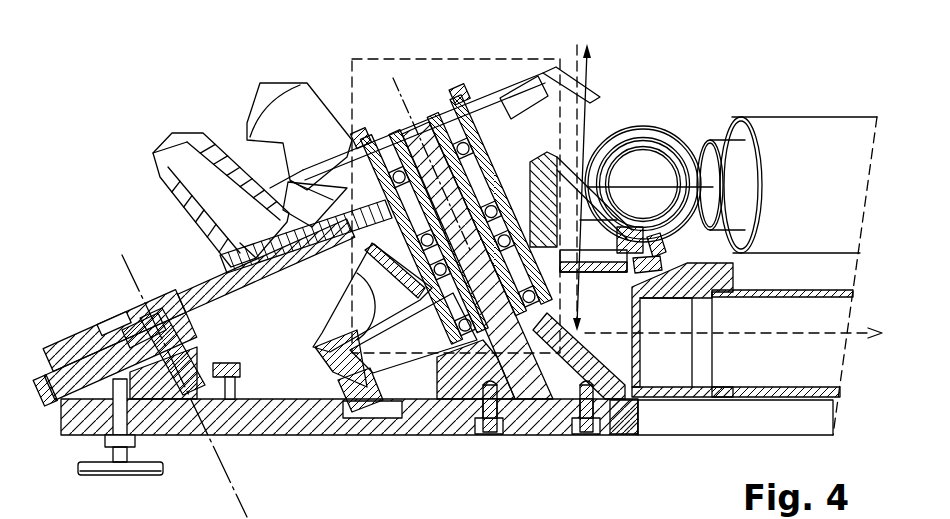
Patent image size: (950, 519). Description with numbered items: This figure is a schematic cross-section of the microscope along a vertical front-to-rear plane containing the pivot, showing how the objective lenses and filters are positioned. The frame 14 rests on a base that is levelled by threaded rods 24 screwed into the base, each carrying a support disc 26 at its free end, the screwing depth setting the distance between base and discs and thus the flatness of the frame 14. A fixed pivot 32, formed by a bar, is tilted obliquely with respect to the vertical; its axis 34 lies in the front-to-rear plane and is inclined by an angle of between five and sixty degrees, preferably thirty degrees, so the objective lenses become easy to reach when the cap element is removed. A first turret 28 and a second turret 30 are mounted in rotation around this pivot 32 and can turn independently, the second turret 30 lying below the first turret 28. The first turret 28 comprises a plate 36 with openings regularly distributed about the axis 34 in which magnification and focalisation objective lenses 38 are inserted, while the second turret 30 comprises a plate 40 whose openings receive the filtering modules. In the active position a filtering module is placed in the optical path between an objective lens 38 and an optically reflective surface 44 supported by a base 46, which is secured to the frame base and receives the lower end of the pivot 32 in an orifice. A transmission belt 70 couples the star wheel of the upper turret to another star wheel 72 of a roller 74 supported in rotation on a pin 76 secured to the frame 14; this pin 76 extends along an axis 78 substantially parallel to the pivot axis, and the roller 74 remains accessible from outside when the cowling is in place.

The frame 14 is at (640, 417).
The threaded rods 24 is at (118, 405).
The support disc 26 is at (100, 468).
The first turret 28 is at (205, 257).
The second turret 30 is at (418, 403).
The pivot 32 is at (527, 403).
The axis 34 is at (391, 98).
The plate 36 is at (307, 187).
The objective lenses 38 is at (163, 147).
The plate 40 is at (375, 412).
The optically reflective surface 44 is at (590, 433).
The base 46 is at (634, 430).
The transmission belt 70 is at (302, 244).
The star wheel 72 is at (93, 345).
The roller 74 is at (76, 382).
The pin 76 is at (162, 405).
The axis 78 is at (128, 272).